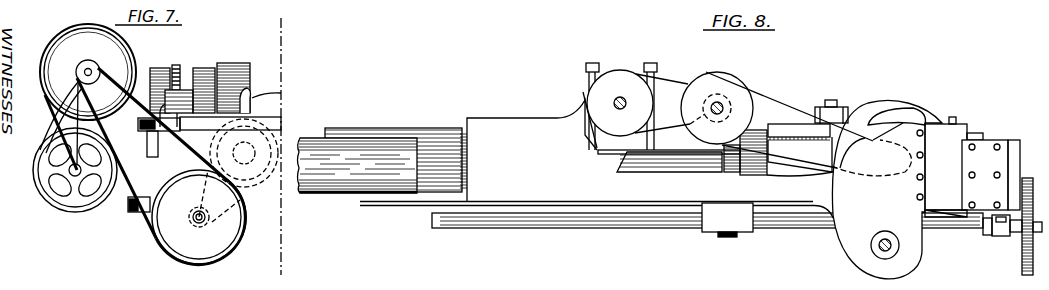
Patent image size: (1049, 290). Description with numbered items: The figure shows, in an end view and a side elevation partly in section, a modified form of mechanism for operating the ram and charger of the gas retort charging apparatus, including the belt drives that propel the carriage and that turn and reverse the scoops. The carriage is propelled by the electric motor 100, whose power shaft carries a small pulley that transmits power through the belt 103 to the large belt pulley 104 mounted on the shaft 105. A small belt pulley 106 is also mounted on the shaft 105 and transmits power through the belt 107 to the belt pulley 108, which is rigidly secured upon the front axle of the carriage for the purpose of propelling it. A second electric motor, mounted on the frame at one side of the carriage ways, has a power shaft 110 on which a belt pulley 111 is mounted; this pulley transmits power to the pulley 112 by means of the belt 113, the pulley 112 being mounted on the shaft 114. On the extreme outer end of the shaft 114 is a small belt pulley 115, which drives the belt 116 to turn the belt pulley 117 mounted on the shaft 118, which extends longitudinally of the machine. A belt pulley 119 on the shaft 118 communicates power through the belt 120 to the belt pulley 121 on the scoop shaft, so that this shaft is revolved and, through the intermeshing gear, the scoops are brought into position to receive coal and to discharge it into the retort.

In FIG. 8, the electric motor 100 is at (918, 103).
In FIG. 8, the belt 103 is at (840, 130).
In FIG. 8, the large belt pulley 104 is at (730, 87).
In FIG. 8, the shaft 105 is at (715, 103).
In FIG. 8, the small belt pulley 106 is at (732, 103).
In FIG. 8, the belt 107 is at (632, 67).
In FIG. 8, the belt pulley 108 is at (597, 96).
In FIG. 7, the power shaft 110 is at (70, 172).
In FIG. 7, the belt pulley 111 is at (72, 176).
In FIG. 7, the pulley 112 is at (62, 60).
In FIG. 7, the belt 113 is at (60, 103).
In FIG. 7, the shaft 114 is at (99, 68).
In FIG. 7, the small belt pulley 115 is at (82, 66).
In FIG. 7, the belt 116 is at (130, 156).
In FIG. 7, the belt pulley 117 is at (198, 250).
In FIG. 8, the belt pulley 117 is at (1022, 252).
In FIG. 7, the shaft 118 is at (195, 219).
In FIG. 8, the shaft 118 is at (955, 227).
In FIG. 7, the belt pulley 119 is at (212, 222).
In FIG. 8, the belt pulley 119 is at (727, 238).
In FIG. 7, the belt 120 is at (247, 190).
In FIG. 7, the belt pulley 121 is at (267, 137).